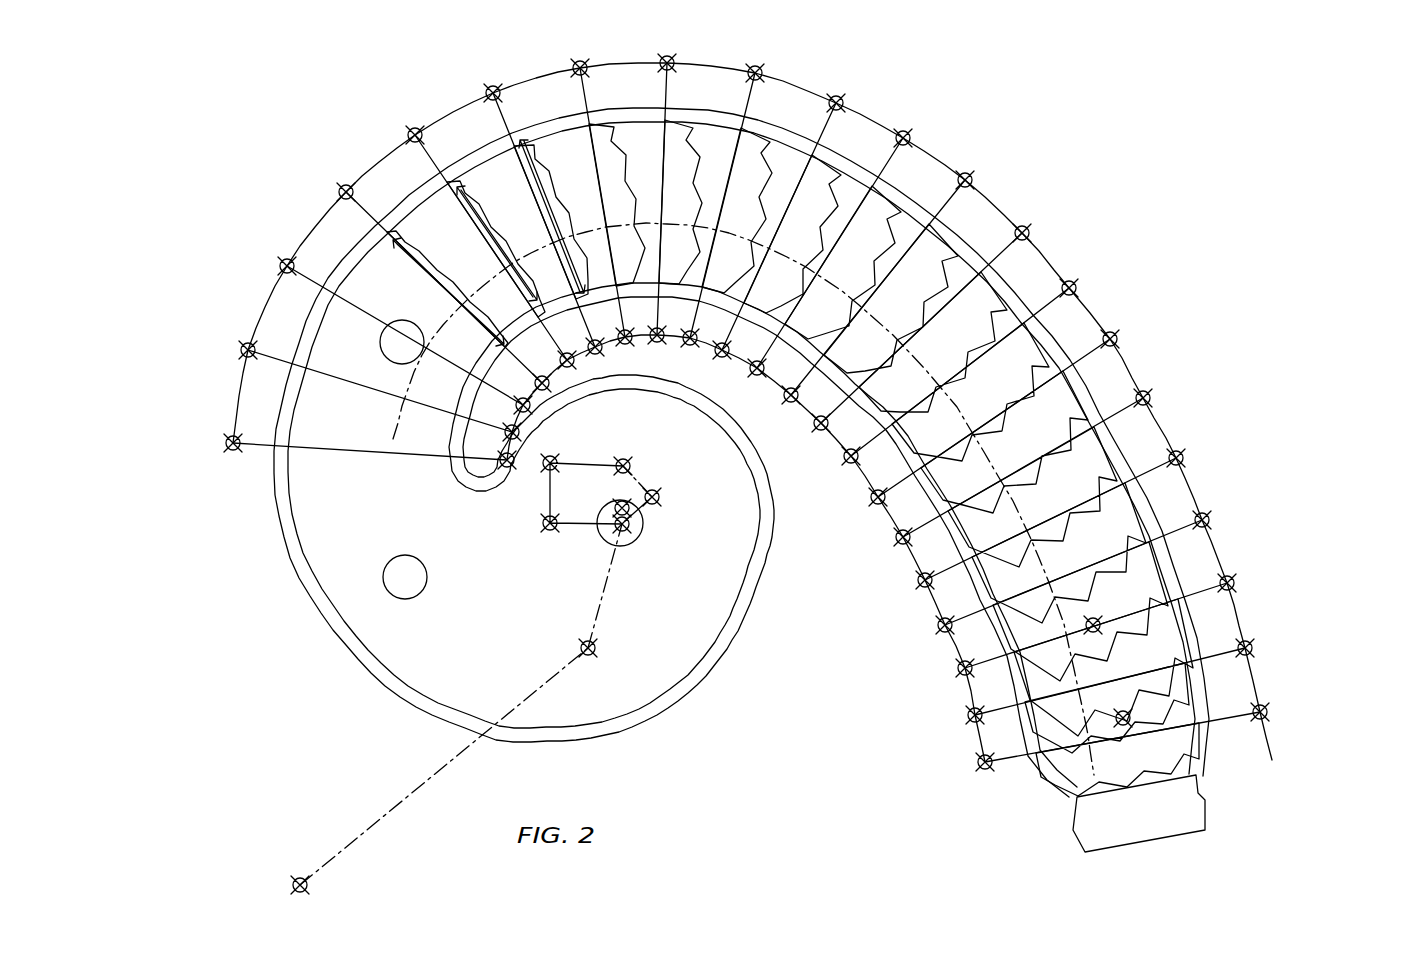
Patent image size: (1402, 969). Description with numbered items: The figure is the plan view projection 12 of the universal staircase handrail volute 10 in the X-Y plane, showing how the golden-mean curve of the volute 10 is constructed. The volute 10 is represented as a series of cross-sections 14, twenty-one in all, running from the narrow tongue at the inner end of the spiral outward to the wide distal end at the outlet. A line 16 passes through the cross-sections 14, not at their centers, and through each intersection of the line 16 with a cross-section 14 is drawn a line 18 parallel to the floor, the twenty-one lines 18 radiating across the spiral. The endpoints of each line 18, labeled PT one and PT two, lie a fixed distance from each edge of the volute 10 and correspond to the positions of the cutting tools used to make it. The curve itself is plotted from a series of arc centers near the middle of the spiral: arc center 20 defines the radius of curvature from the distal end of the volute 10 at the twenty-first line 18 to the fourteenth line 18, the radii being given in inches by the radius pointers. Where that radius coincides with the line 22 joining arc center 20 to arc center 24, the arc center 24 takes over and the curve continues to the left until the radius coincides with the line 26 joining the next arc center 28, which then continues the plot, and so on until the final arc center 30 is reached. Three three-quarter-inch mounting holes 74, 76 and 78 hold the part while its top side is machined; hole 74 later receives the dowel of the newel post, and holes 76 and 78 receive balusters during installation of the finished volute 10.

The universal staircase handrail volute 10 is at (329, 697).
The plan view projection 12 is at (412, 705).
The cross-section 14 is at (1073, 842).
The line 16 is at (447, 478).
The line 18 is at (318, 452).
The arc center 20 is at (310, 886).
The line 22 is at (385, 826).
The arc center 24 is at (580, 646).
The line 26 is at (608, 606).
The arc center 28 is at (661, 497).
The final arc center 30 is at (614, 505).
The mounting hole 74 is at (643, 537).
The mounting hole 76 is at (425, 582).
The mounting hole 78 is at (403, 320).